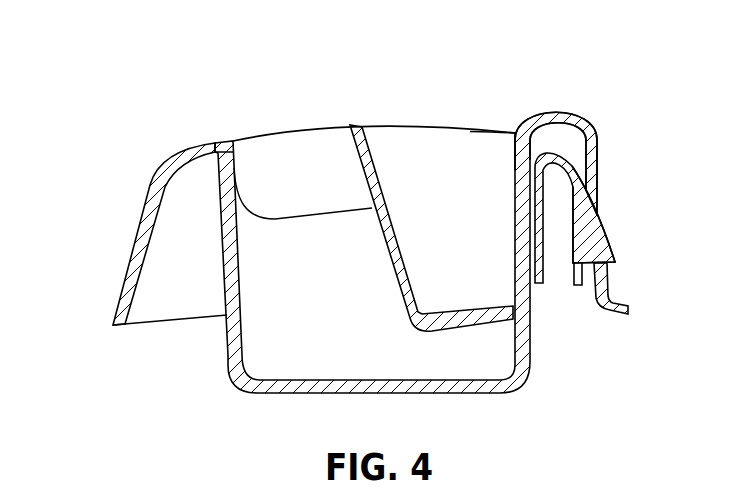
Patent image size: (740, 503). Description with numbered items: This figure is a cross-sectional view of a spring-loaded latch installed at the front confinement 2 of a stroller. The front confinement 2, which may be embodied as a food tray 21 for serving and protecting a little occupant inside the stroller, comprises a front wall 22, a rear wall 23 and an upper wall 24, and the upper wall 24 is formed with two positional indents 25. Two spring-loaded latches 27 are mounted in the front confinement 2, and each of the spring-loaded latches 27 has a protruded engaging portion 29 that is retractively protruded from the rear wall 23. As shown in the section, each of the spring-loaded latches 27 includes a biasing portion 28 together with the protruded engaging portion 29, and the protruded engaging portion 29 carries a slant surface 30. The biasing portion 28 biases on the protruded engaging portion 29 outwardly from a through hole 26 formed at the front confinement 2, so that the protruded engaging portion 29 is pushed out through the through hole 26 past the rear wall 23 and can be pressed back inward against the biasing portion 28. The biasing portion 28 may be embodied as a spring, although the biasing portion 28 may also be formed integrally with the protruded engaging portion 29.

The front confinement 2 is at (110, 83).
The food tray 21 is at (183, 226).
The front wall 22 is at (128, 258).
The rear wall 23 is at (597, 137).
The upper wall 24 is at (269, 100).
The positional indents 25 is at (421, 132).
The through hole 26 is at (622, 181).
The spring-loaded latches 27 is at (578, 286).
The biasing portion 28 is at (512, 134).
The protruded engaging portion 29 is at (616, 265).
The slant surface 30 is at (635, 225).